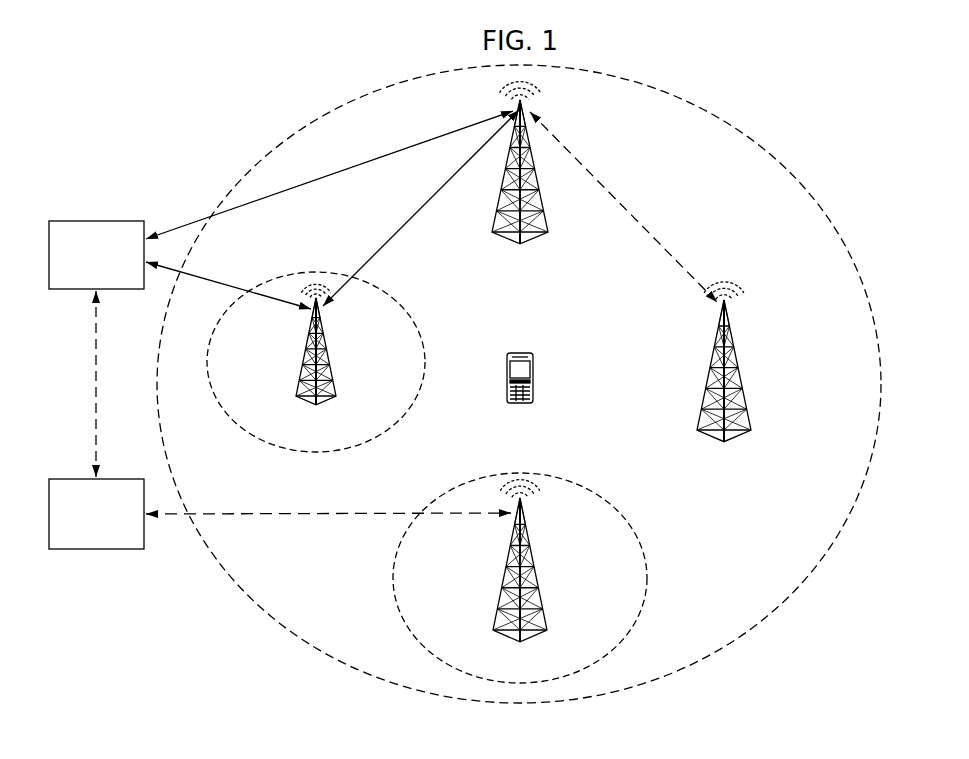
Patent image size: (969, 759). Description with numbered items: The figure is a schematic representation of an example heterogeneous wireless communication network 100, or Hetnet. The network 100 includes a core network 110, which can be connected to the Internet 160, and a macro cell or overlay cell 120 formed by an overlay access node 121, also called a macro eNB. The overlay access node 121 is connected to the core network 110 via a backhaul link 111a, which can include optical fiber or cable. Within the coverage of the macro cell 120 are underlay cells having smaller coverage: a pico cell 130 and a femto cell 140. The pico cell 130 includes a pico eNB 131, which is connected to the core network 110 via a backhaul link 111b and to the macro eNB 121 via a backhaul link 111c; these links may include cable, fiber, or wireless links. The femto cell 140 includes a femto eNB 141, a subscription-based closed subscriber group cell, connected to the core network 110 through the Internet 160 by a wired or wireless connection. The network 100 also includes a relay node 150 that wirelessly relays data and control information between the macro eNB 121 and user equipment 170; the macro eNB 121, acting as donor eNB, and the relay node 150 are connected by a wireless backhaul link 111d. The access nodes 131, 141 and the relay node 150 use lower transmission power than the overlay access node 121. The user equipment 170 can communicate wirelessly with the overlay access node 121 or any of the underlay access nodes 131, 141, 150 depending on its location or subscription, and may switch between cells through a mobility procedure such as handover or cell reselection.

The heterogeneous wireless communication network 100 is at (239, 108).
The core network 110 is at (84, 218).
The backhaul link 111a is at (331, 181).
The backhaul link 111b is at (255, 293).
The backhaul link 111c is at (407, 230).
The wireless backhaul link 111d is at (623, 213).
The macro cell 120 is at (709, 105).
The overlay access node 121 is at (544, 211).
The pico cell 130 is at (270, 445).
The pico eNB 131 is at (305, 354).
The femto cell 140 is at (397, 604).
The femto eNB 141 is at (545, 610).
The relay node 150 is at (740, 373).
The Internet 160 is at (85, 552).
The user equipment 170 is at (535, 372).